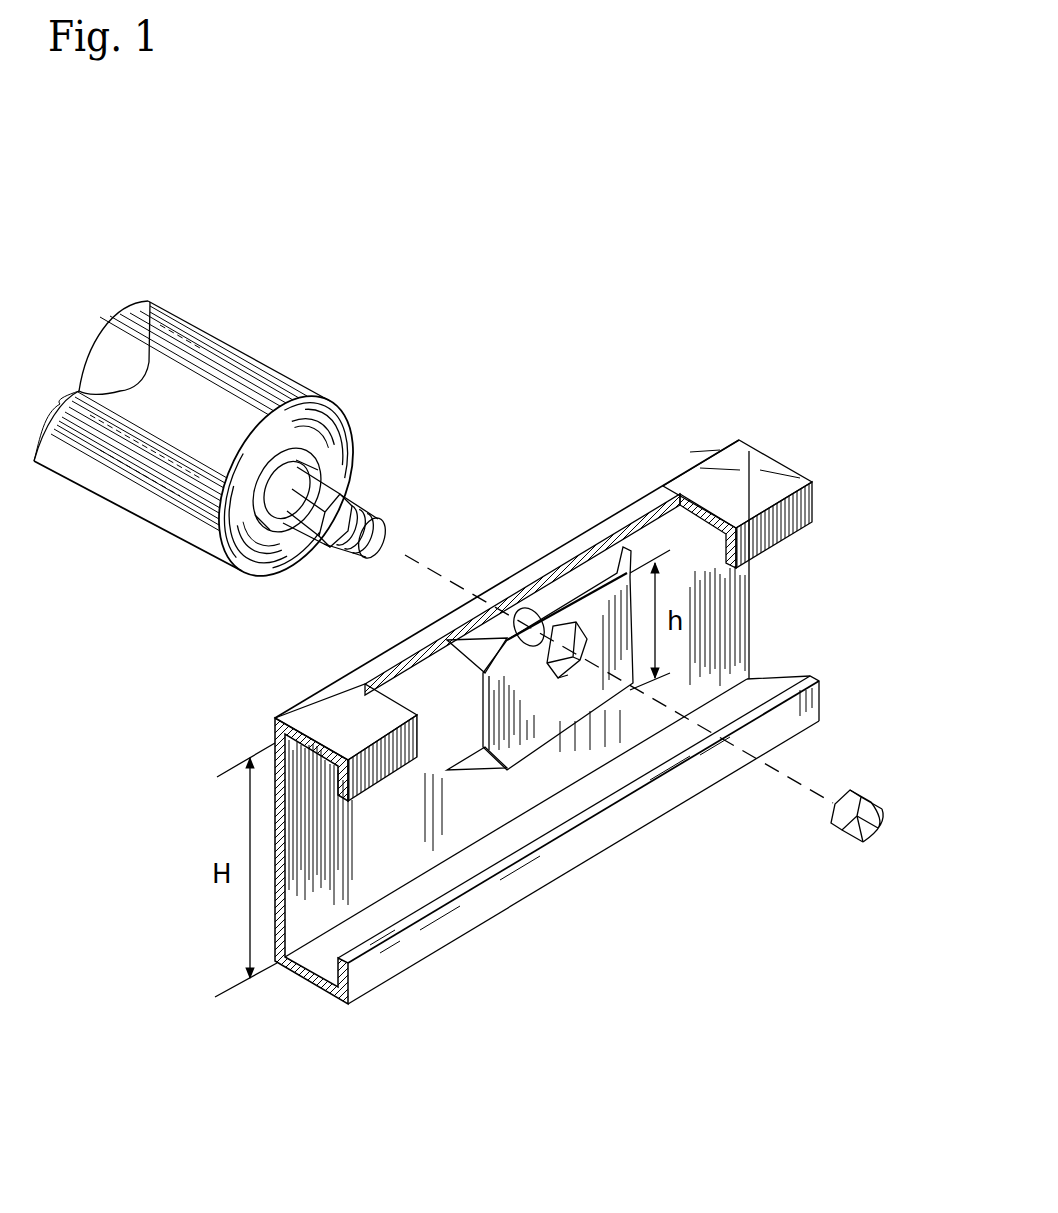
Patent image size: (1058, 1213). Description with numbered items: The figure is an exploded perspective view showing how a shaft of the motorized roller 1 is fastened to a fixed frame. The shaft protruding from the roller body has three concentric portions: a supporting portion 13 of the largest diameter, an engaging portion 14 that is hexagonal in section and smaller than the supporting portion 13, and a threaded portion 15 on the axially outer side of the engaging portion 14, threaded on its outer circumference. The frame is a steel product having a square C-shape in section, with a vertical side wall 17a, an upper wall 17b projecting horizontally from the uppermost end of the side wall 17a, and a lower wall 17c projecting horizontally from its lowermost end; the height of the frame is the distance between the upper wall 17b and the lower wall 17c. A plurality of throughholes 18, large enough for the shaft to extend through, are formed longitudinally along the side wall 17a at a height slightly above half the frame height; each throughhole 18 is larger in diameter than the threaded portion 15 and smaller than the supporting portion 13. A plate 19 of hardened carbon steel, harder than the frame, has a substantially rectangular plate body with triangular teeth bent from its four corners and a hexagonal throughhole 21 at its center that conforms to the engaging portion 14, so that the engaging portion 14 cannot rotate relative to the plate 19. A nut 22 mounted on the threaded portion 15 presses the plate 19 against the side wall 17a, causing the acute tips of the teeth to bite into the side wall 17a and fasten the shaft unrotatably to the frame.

The motorized roller 1 is at (237, 449).
The supporting portion 13 is at (327, 471).
The engaging portion 14 is at (353, 471).
The threaded portion 15 is at (380, 520).
The side wall 17a is at (750, 611).
The upper wall 17b is at (718, 470).
The lower wall 17c is at (322, 968).
The throughhole 18 is at (529, 607).
The plate 19 is at (540, 637).
The throughhole 21 is at (572, 624).
The nut 22 is at (843, 833).